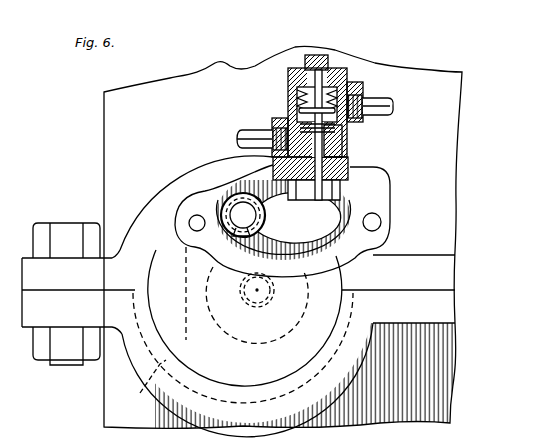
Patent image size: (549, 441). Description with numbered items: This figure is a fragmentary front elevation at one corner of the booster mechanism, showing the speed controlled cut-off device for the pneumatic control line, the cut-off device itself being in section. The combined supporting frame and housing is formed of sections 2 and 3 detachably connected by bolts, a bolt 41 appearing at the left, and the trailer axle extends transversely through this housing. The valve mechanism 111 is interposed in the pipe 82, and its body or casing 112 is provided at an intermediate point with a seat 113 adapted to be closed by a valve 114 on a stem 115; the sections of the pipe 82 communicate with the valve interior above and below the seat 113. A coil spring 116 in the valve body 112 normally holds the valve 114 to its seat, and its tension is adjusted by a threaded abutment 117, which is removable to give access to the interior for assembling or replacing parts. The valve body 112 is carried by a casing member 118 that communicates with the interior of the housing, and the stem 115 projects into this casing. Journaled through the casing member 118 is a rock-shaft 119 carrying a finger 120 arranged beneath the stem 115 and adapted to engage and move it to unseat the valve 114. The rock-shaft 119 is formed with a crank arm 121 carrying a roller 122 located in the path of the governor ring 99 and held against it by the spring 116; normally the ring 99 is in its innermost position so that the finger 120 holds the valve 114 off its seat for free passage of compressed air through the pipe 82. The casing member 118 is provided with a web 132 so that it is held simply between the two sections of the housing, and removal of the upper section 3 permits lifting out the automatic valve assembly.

The section 2 is at (450, 377).
The section 3 is at (457, 160).
The clamp bolt 41 is at (57, 362).
The pipe 82 is at (388, 100).
The ring 99 is at (222, 333).
The valve mechanism 111 is at (293, 82).
The valve body 112 is at (339, 84).
The seat 113 is at (348, 134).
The valve 114 is at (308, 112).
The stem 115 is at (338, 146).
The coil spring 116 is at (302, 95).
The threaded abutment 117 is at (310, 60).
The casing member 118 is at (161, 281).
The rock-shaft 119 is at (240, 210).
The finger 120 is at (281, 217).
The crank arm 121 is at (248, 289).
The roller 122 is at (257, 340).
The web 132 is at (139, 382).